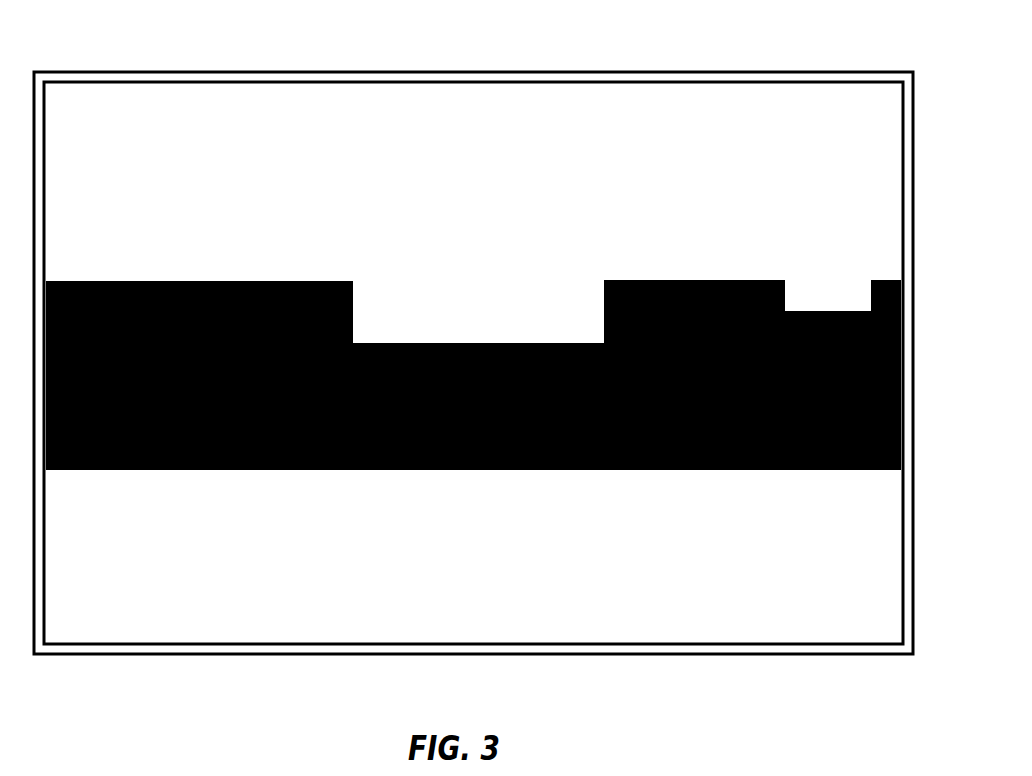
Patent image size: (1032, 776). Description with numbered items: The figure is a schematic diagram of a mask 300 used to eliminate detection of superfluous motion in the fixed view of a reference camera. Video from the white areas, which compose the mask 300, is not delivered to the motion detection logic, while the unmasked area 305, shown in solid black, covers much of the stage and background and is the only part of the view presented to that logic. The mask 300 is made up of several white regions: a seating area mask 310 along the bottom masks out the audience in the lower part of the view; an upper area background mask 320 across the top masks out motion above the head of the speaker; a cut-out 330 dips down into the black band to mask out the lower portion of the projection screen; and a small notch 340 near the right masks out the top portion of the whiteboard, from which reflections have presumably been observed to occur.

The mask 300 is at (473, 355).
The unmasked area 305 is at (172, 280).
The seating area mask 310 is at (610, 590).
The upper area background mask 320 is at (505, 122).
The cut-out 330 is at (439, 306).
The notch 340 is at (823, 294).